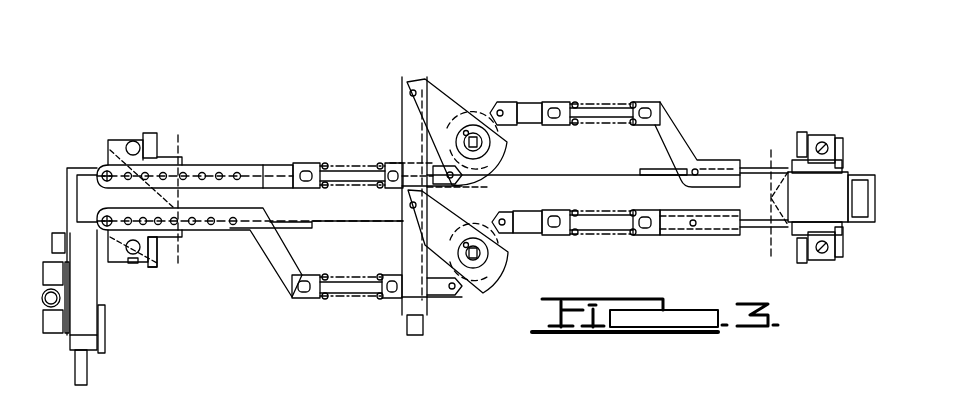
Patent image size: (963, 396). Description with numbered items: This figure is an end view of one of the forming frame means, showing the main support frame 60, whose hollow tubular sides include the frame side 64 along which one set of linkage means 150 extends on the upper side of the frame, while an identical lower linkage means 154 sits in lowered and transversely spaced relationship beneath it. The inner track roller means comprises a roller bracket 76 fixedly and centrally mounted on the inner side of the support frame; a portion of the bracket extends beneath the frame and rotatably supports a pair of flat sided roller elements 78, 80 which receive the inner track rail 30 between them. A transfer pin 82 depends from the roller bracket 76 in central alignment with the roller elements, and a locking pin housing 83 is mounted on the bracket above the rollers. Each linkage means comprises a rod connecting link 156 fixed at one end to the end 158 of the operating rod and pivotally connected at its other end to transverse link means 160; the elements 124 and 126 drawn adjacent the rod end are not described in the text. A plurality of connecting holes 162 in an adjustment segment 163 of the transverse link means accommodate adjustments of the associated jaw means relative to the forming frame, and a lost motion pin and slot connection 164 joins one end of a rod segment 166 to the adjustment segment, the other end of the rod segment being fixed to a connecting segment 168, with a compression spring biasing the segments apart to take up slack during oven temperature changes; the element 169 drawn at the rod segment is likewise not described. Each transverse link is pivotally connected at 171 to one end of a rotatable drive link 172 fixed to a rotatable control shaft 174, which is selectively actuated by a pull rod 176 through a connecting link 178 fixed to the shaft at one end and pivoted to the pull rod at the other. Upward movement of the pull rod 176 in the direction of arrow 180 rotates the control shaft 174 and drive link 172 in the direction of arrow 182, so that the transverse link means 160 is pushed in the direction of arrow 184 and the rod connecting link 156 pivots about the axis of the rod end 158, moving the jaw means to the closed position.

The inner track rail 30 is at (60, 298).
The main support frame 60 is at (760, 210).
The frame side 64 is at (608, 187).
The roller bracket 76 is at (83, 318).
The flat sided roller element 78 is at (40, 255).
The flat sided roller element 80 is at (50, 330).
The transfer pin 82 is at (83, 374).
The locking pin housing 83 is at (105, 343).
The stop block 124 is at (150, 132).
The pivot 126 is at (134, 138).
The linkage means 150 is at (695, 125).
The lower linkage means 154 is at (458, 304).
The rod connecting link 156 is at (108, 152).
The end of the operating rod 158 is at (128, 147).
The transverse link means 160 is at (313, 158).
The connecting holes 162 is at (202, 166).
The adjustment segment 163 is at (270, 165).
The pin and slot connection 164 is at (392, 167).
The rod segment 166 is at (363, 179).
The connecting segment 168 is at (398, 184).
The pin 169 is at (327, 167).
The pivotal connection 171 is at (470, 178).
The rotatable drive link 172 is at (488, 105).
The rotatable control shaft 174 is at (490, 154).
The pull rod 176 is at (405, 307).
The connecting link 178 is at (455, 107).
The arrow 180 is at (409, 344).
The arrow 182 is at (487, 105).
The arrow 184 is at (183, 197).